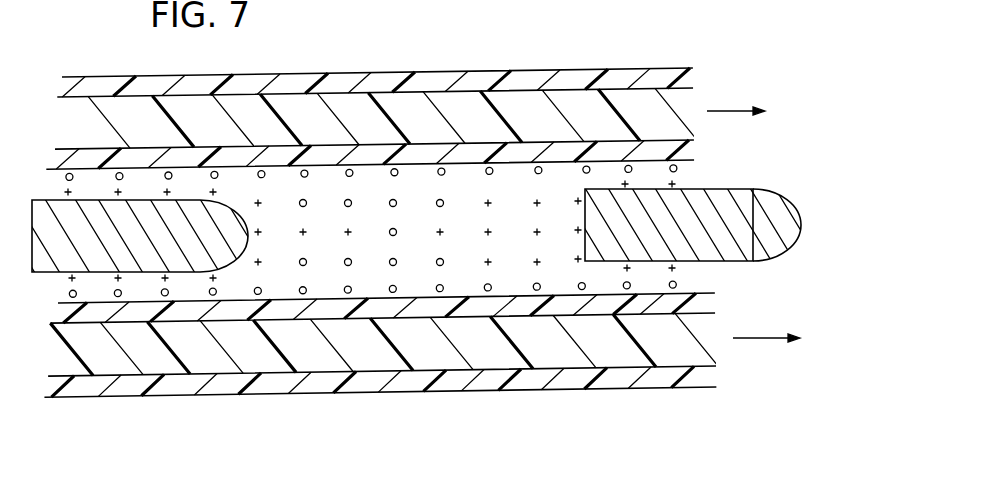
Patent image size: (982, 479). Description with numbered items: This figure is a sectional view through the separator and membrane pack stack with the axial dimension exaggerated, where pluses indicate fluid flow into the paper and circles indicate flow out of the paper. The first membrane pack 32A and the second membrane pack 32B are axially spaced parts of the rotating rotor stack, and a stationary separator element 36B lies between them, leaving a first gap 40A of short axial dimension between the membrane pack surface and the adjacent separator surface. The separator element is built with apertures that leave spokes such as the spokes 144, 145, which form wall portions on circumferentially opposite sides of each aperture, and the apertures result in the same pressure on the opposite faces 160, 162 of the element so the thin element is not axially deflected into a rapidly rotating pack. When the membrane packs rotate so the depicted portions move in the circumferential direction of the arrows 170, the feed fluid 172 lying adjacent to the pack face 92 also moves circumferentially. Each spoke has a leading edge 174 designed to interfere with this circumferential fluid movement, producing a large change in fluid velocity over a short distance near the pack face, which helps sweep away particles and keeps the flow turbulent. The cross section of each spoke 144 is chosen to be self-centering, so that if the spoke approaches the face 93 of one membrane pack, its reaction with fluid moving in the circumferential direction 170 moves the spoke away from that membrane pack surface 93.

The first membrane pack 32A is at (490, 73).
The second membrane pack 32B is at (385, 375).
The first gap 40A is at (46, 182).
The separator element 36B is at (611, 275).
The pack face 92 is at (460, 176).
The face of one membrane pack 93 is at (358, 295).
The feed fluid 172 is at (400, 171).
The leading edge 174 is at (587, 246).
The spoke 145 is at (96, 275).
The face of the separator element 160 is at (705, 197).
The spoke 144 is at (747, 263).
The face of the separator element 162 is at (675, 388).
The circumferential direction 170 is at (725, 111).